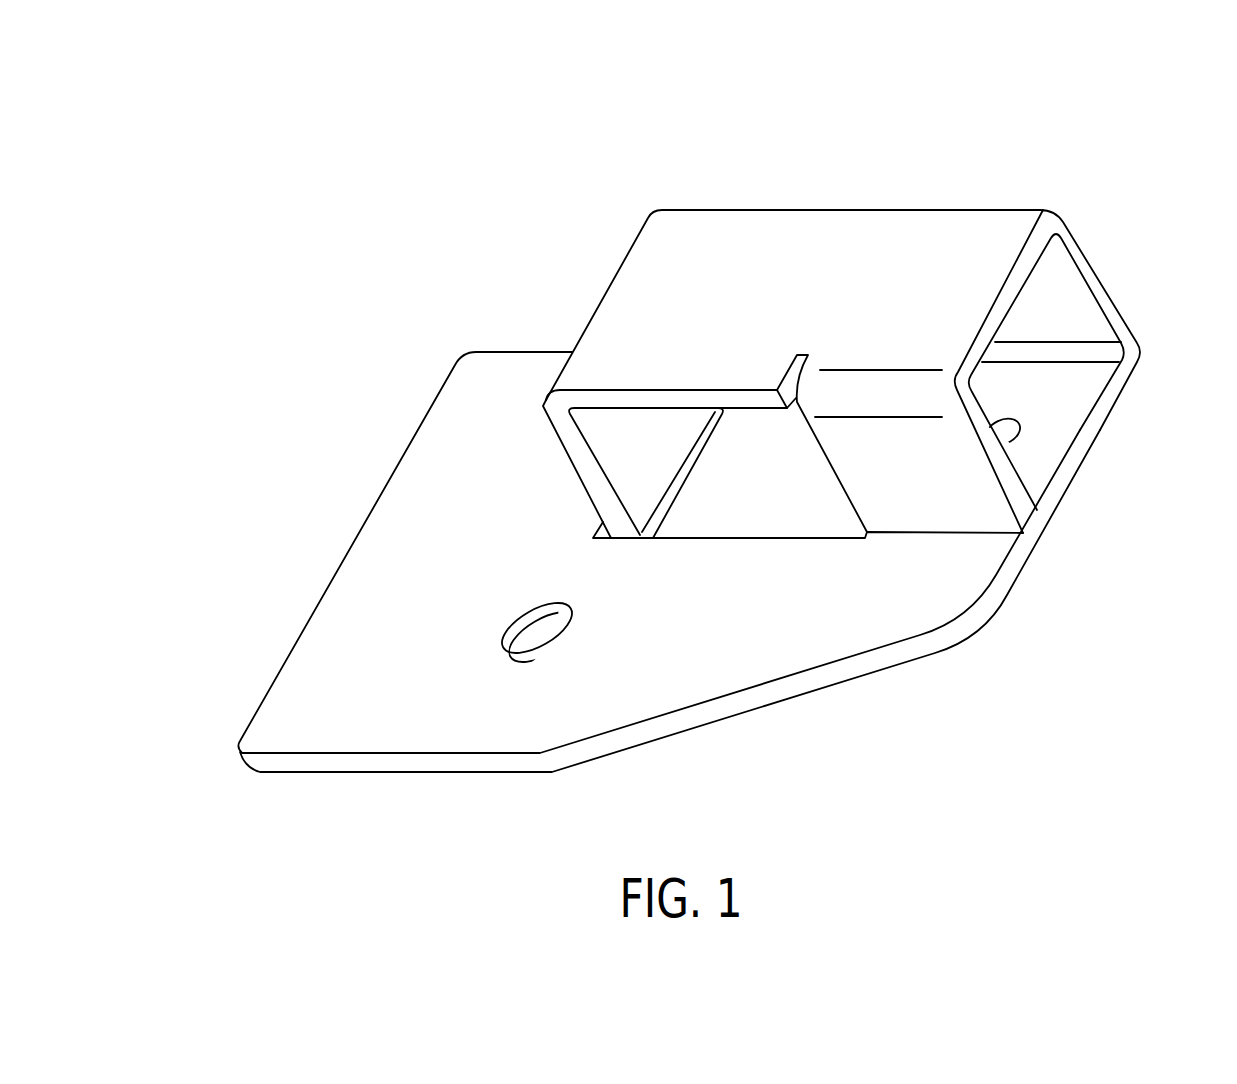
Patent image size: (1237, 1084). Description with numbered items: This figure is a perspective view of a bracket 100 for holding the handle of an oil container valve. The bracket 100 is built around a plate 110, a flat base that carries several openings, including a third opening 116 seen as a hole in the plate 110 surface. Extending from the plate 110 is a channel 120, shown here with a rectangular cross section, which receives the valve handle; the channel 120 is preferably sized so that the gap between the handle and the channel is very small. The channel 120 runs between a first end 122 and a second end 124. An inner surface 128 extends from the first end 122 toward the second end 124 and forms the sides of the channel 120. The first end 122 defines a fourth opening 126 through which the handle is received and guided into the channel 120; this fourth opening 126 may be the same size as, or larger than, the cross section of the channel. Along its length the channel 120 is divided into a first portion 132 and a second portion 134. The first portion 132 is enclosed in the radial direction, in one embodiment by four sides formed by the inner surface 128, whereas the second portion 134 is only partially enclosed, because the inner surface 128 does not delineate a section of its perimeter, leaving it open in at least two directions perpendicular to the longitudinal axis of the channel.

The bracket 100 is at (339, 283).
The plate 110 is at (392, 682).
The third opening 116 is at (527, 606).
The channel 120 is at (1072, 315).
The first end 122 is at (1022, 268).
The second end 124 is at (615, 275).
The fourth opening 126 is at (1082, 397).
The inner surface 128 is at (1035, 458).
The first portion 132 is at (922, 468).
The second portion 134 is at (718, 302).